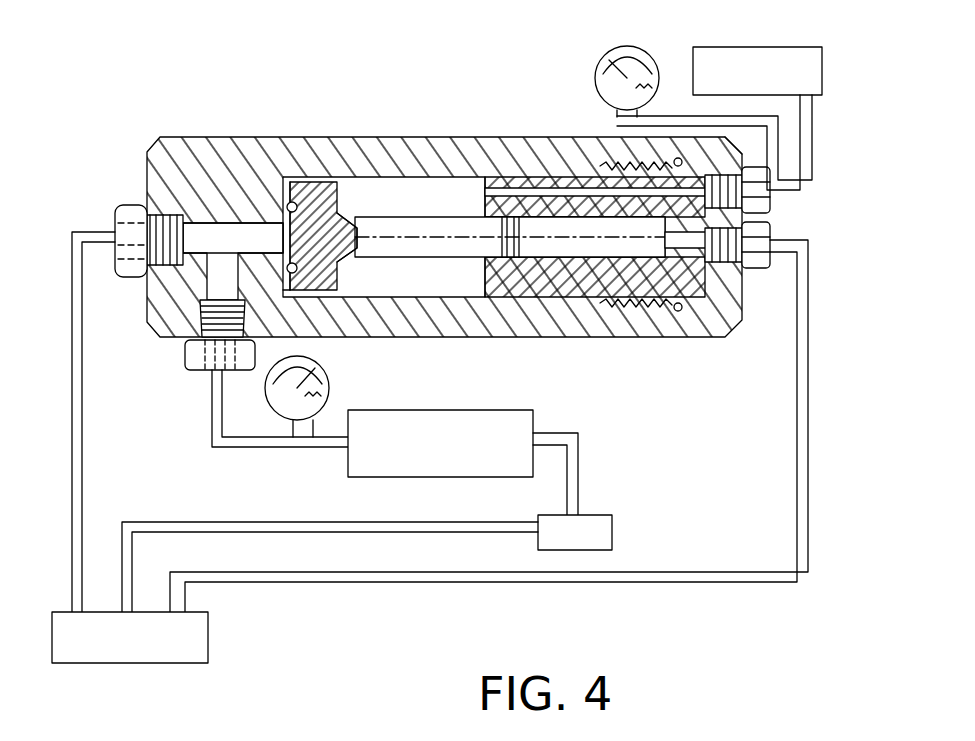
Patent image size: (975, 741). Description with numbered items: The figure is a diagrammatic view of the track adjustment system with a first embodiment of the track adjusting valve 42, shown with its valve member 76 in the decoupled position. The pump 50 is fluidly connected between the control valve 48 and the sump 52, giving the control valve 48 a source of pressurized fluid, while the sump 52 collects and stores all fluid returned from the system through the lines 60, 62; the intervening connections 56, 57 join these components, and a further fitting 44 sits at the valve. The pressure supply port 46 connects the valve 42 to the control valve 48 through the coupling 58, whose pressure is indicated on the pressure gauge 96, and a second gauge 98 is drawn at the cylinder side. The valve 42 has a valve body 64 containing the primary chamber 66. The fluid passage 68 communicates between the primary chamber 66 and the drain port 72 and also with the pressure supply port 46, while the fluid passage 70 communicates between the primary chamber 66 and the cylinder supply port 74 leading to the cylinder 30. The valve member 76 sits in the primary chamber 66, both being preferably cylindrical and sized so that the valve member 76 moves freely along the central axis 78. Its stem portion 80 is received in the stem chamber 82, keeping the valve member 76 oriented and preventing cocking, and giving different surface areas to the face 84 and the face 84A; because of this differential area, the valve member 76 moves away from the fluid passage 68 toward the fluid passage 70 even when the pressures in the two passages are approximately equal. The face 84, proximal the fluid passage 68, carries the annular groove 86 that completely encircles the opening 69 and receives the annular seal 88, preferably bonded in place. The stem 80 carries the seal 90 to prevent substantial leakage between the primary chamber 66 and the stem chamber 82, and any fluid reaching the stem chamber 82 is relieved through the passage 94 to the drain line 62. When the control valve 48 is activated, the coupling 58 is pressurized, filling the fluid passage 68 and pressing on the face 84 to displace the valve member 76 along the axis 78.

The cylinder 30 is at (681, 64).
The track adjustment valve 42 is at (436, 230).
The fittings 44 is at (772, 194).
The pressure supply port 46 is at (200, 380).
The control valve 48 is at (537, 417).
The pump 50 is at (612, 525).
The sump 52 is at (208, 633).
The conduit 56 is at (580, 470).
The conduit 57 is at (377, 522).
The coupling 58 is at (224, 447).
The return line 60 is at (82, 336).
The drain line 62 is at (355, 584).
The valve body 64 is at (258, 155).
The primary chamber 66 is at (424, 214).
The fluid passage 68 is at (283, 198).
The opening 69 is at (283, 237).
The fluid passage 70 is at (575, 195).
The drain port 72 is at (105, 222).
The cylinder supply port 74 is at (762, 162).
The valve member 76 is at (313, 297).
The central axis 78 is at (505, 258).
The stem portion 80 is at (400, 245).
The stem chamber 82 is at (622, 250).
The face 84 is at (285, 200).
The face 84A is at (368, 252).
The annular groove 86 is at (345, 290).
The annular seal 88 is at (288, 205).
The seal 90 is at (583, 300).
The passage 94 is at (725, 310).
The pressure gauge 96 is at (266, 400).
The pressure gauge 98 is at (620, 46).